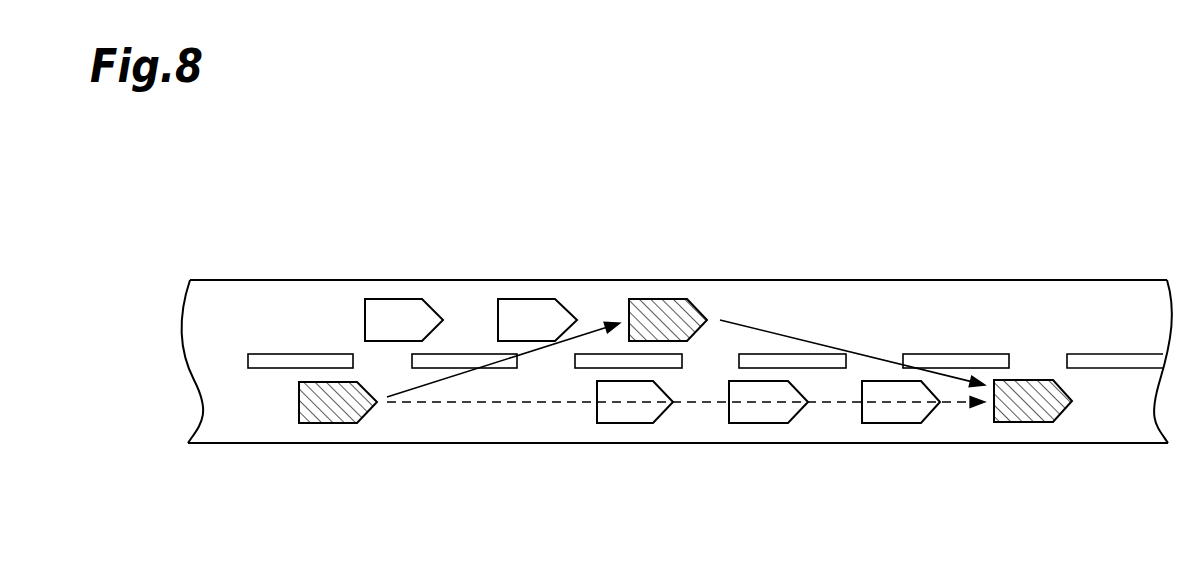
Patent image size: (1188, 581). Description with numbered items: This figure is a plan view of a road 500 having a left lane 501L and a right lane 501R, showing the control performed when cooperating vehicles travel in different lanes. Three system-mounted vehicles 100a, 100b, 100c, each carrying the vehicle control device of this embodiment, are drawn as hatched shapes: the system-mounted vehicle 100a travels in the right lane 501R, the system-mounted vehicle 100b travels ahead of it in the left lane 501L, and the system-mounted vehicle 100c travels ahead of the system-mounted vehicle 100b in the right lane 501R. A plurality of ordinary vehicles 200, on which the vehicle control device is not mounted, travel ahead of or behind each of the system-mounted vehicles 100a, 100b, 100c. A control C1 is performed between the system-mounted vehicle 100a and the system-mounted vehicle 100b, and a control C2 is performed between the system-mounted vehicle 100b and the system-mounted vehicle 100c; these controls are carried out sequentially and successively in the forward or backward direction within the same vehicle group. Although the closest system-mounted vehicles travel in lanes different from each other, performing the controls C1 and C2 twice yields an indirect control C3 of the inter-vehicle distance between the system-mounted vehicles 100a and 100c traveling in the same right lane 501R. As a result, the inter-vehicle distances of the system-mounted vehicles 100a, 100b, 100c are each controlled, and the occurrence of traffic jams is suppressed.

The road 500 is at (1047, 295).
The left lane 501L is at (210, 315).
The right lane 501R is at (213, 400).
The ordinary vehicle 200 is at (400, 298).
The system-mounted vehicle 100a is at (330, 424).
The system-mounted vehicle 100b is at (663, 298).
The system-mounted vehicle 100c is at (1028, 423).
The control C1 is at (453, 373).
The control C2 is at (833, 352).
The indirect control C3 is at (547, 403).